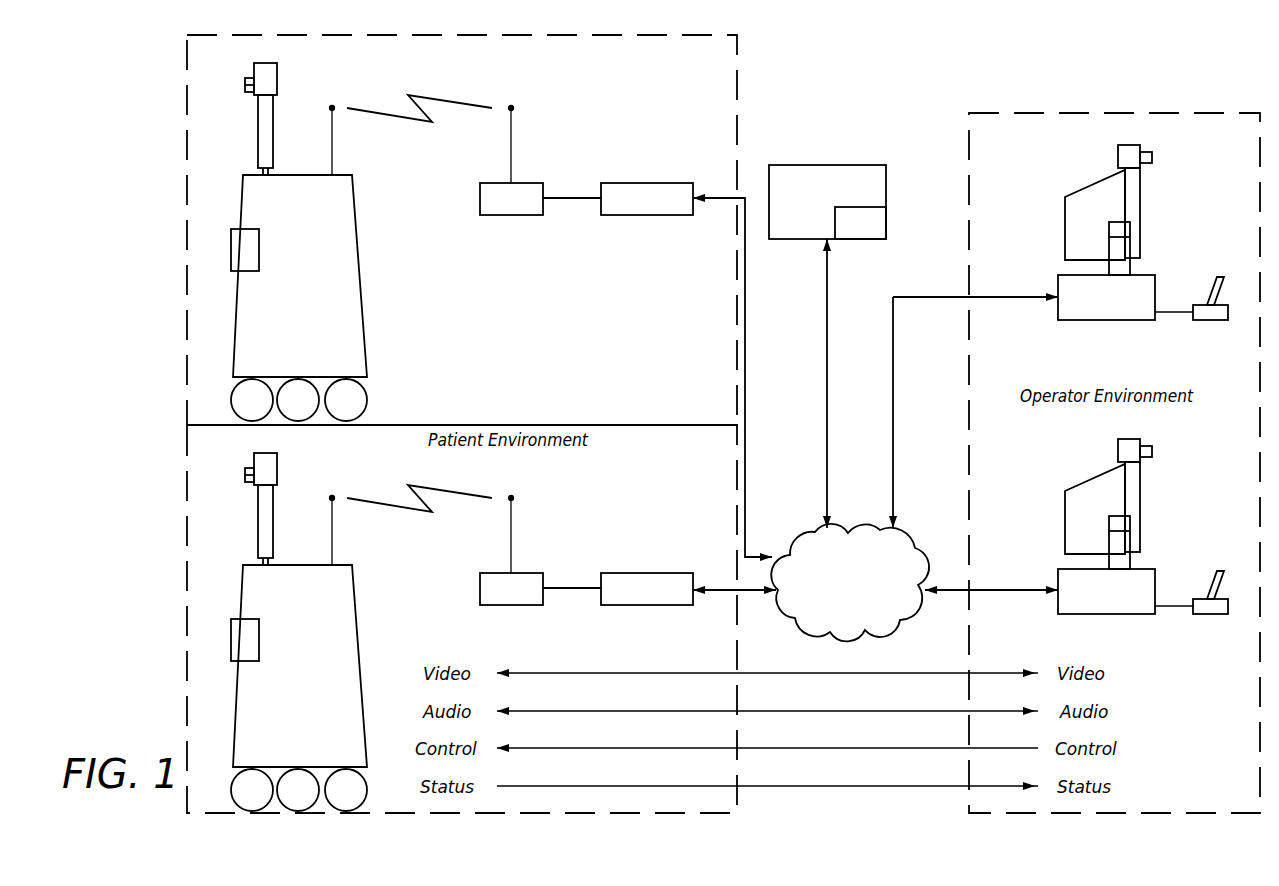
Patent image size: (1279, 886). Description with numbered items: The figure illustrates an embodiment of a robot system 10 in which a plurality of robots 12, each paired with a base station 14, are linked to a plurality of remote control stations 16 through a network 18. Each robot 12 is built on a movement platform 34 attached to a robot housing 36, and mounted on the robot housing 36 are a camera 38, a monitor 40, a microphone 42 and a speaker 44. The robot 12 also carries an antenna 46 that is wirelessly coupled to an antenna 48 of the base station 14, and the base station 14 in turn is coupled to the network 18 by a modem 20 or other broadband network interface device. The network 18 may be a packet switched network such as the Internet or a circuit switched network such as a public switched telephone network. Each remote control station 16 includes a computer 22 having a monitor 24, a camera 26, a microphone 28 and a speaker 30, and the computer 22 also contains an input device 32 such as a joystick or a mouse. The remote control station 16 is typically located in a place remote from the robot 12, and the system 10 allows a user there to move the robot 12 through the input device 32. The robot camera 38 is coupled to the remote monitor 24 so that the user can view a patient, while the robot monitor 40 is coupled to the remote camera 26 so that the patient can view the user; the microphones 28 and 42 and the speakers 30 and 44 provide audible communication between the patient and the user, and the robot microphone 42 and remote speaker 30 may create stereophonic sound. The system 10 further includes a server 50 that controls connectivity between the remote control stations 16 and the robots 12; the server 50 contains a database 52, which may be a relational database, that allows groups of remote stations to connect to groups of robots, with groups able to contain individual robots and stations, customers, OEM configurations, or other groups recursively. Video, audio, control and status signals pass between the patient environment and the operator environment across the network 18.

The robot system 10 is at (787, 480).
The robot 12 is at (337, 218).
The base station 14 is at (525, 183).
The remote control station 16 is at (1072, 217).
The network 18 is at (850, 583).
The modem 20 is at (646, 183).
The computer 22 is at (1095, 320).
The monitor 24 is at (1135, 195).
The camera 26 is at (1122, 158).
The microphone 28 is at (1115, 222).
The speaker 30 is at (1128, 268).
The input device 32 is at (1228, 312).
The movement platform 34 is at (348, 398).
The robot housing 36 is at (257, 352).
The camera 38 is at (277, 89).
The monitor 40 is at (273, 133).
The microphone 42 is at (268, 69).
The speaker 44 is at (231, 252).
The antenna 46 is at (332, 105).
The antenna 48 is at (511, 105).
The server 50 is at (827, 202).
The database 52 is at (860, 223).